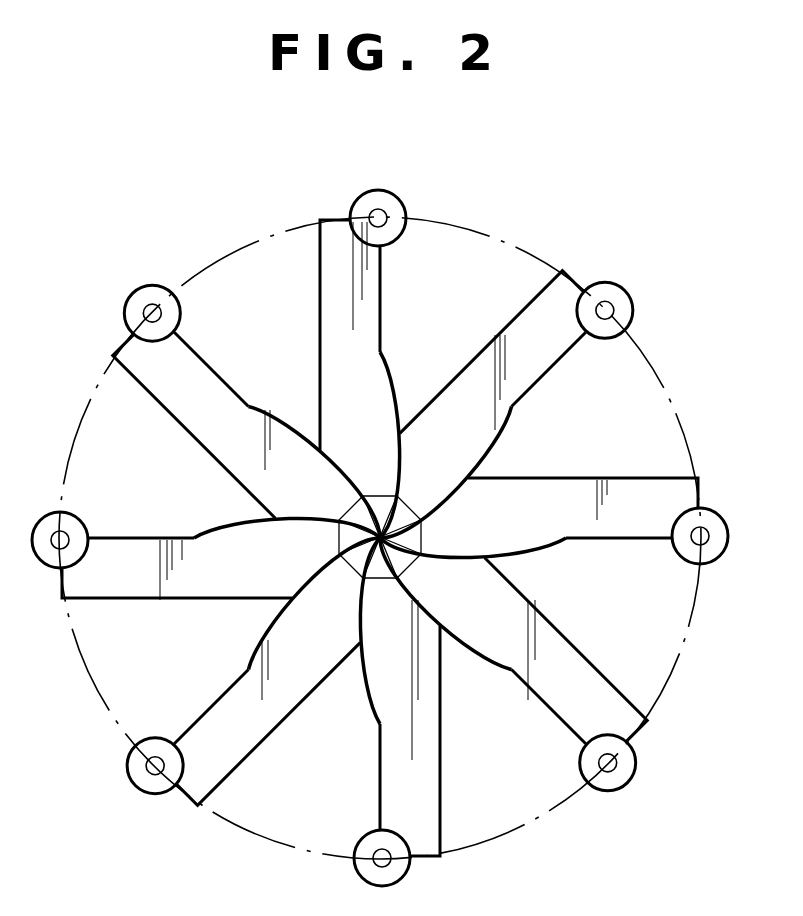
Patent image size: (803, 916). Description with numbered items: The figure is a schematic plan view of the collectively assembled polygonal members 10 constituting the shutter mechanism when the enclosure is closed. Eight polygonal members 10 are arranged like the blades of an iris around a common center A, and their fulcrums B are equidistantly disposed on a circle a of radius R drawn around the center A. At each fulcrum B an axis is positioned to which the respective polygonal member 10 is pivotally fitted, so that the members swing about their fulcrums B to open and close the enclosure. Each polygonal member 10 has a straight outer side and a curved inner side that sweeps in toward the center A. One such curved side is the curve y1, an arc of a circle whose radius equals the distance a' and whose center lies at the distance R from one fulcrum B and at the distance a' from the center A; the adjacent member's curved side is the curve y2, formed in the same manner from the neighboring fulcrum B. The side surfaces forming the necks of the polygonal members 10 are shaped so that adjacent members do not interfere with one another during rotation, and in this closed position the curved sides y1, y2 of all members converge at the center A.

The circle a is at (472, 229).
The polygonal member 10 is at (563, 297).
The fulcrum B is at (603, 296).
The center A is at (376, 537).
The curve y1 is at (498, 435).
The curve y2 is at (402, 443).